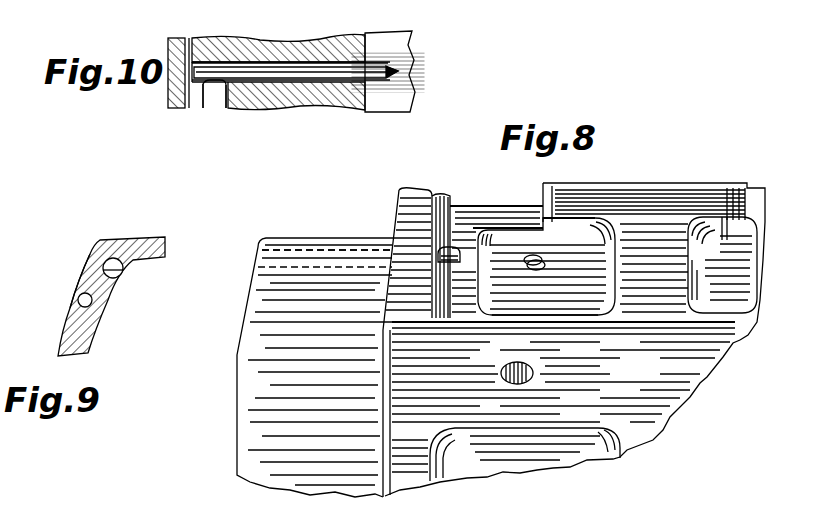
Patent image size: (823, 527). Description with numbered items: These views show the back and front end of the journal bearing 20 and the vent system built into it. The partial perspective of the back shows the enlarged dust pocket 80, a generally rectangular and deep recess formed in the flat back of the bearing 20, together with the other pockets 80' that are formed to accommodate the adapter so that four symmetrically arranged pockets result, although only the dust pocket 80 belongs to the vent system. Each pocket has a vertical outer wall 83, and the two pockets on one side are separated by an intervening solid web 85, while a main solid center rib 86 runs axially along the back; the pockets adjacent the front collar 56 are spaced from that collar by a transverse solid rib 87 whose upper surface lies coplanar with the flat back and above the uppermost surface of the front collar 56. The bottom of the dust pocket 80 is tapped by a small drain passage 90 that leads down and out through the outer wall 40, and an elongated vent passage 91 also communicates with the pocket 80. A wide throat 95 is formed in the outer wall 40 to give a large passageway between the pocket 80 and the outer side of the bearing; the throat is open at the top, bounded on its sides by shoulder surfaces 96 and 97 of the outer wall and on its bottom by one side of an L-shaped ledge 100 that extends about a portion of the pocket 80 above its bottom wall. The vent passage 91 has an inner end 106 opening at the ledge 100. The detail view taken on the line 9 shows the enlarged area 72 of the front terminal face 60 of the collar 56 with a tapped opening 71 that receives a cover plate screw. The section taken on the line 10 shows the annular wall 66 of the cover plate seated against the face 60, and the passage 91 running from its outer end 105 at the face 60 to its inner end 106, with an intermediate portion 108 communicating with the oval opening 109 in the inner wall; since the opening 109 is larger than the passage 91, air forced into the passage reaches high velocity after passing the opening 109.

In FIG. 8, the bearing 20 is at (683, 365).
In FIG. 8, the outer wall 40 is at (651, 207).
In FIG. 8, the front collar 56 is at (257, 248).
In FIG. 9, the terminal face 60 is at (75, 349).
In FIG. 10, the annular wall 66 is at (172, 95).
In FIG. 9, the tapped openings 71 is at (79, 300).
In FIG. 9, the enlarged areas 72 is at (72, 304).
In FIG. 8, the dust pocket 80 is at (545, 342).
In FIG. 8, the pockets 80' is at (593, 340).
In FIG. 8, the vertical outer walls 83 is at (563, 229).
In FIG. 8, the web 85 is at (665, 275).
In FIG. 8, the center rib 86 is at (640, 389).
In FIG. 8, the transverse rib 87 is at (402, 208).
In FIG. 8, the drain passage 90 is at (546, 266).
In FIG. 10, the vent passage 91 is at (262, 70).
In FIG. 9, the vent passage 91 is at (118, 258).
In FIG. 8, the vent passage 91 is at (308, 252).
In FIG. 8, the throat 95 is at (450, 208).
In FIG. 8, the shoulder surface 96 is at (446, 205).
In FIG. 8, the shoulder surface 97 is at (545, 187).
In FIG. 8, the L-shaped ledge 100 is at (528, 261).
In FIG. 10, the outer end 105 is at (205, 62).
In FIG. 10, the inner end 106 is at (399, 71).
In FIG. 8, the inner end 106 is at (461, 262).
In FIG. 10, the intermediate portion 108 is at (221, 84).
In FIG. 10, the opening 109 is at (207, 108).
In FIG. 8, the section line 9— 9 is at (268, 326).
In FIG. 9, the section line 10— 10 is at (88, 232).